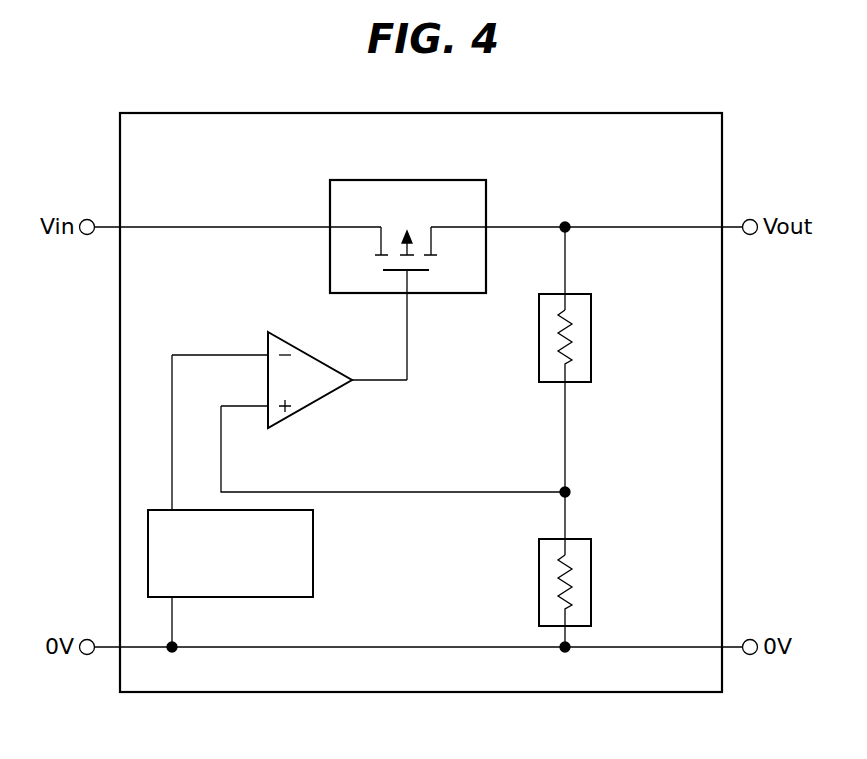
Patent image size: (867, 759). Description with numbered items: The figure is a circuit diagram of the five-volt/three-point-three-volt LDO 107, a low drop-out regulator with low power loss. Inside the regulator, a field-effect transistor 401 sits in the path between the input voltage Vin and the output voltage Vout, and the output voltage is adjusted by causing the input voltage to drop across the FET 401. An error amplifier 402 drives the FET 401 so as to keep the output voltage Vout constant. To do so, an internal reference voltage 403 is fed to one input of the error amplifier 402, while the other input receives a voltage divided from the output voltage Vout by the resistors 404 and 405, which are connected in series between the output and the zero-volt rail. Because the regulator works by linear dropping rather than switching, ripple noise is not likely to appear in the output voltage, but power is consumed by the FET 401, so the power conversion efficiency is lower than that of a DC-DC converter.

The 5-V/3.3-V LDO 107 is at (722, 148).
The field-effect transistor 401 is at (455, 180).
The error amplifier 402 is at (288, 335).
The internal reference voltage 403 is at (313, 553).
The resistor 404 is at (593, 338).
The resistor 405 is at (593, 568).